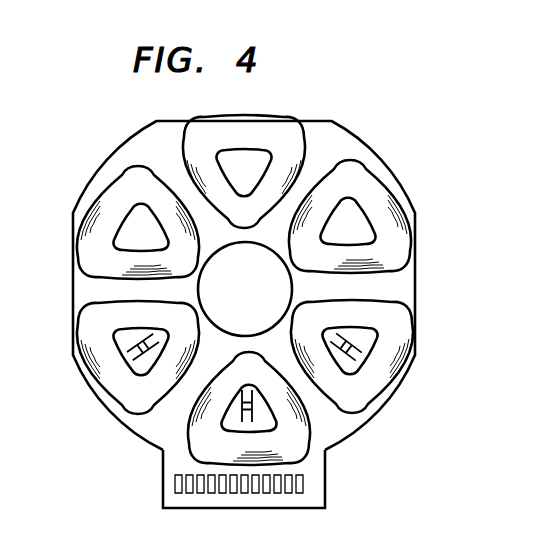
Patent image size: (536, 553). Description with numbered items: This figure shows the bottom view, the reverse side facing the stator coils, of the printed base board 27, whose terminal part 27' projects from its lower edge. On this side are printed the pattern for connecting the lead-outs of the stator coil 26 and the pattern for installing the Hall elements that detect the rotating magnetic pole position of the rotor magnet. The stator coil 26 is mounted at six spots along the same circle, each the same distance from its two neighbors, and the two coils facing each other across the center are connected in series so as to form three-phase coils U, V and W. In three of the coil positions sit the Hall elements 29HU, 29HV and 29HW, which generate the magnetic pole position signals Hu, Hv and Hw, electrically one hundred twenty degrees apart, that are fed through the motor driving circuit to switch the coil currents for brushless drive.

The stator coil 26 is at (278, 140).
The printed base board 27 is at (244, 275).
The terminal part 27' is at (271, 478).
The Hall element for U phase 29HU is at (135, 352).
The Hall element for V phase 29HV is at (353, 338).
The Hall element for W phase 29HW is at (243, 407).